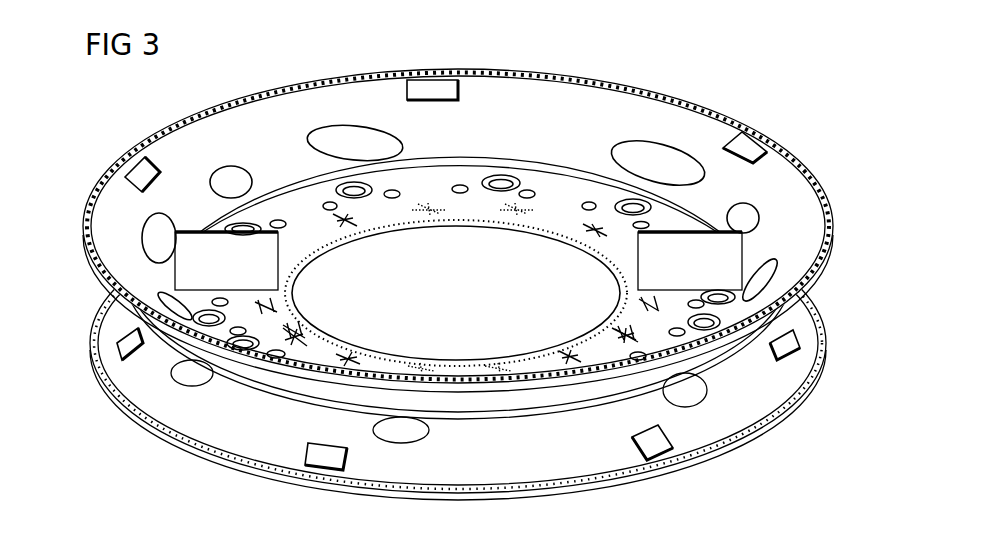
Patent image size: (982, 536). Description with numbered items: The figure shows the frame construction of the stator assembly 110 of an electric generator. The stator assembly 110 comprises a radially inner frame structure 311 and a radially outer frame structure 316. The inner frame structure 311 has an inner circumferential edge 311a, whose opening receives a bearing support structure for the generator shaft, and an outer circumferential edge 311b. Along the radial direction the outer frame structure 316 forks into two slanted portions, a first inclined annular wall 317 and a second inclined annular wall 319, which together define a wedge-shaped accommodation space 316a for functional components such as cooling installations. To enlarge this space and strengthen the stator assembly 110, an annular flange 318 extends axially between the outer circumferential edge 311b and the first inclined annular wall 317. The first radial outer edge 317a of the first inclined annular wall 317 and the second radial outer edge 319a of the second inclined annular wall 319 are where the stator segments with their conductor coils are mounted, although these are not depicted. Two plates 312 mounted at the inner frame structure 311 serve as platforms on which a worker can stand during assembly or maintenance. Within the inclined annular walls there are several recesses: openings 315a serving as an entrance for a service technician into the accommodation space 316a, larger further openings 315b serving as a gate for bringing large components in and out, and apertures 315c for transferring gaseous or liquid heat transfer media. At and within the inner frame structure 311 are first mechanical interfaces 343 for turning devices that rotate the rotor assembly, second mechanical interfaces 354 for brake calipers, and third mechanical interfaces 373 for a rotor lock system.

The stator assembly 110 is at (740, 80).
The radially inner frame structure 311 is at (545, 353).
The inner circumferential edge 311a is at (482, 352).
The outer circumferential edge 311b is at (395, 196).
The plates 312 is at (298, 283).
The openings 315a is at (228, 183).
The further openings 315b is at (357, 140).
The apertures 315c is at (430, 92).
The radially outer frame structure 316 is at (780, 442).
The accommodation space 316a is at (830, 272).
The first inclined annular wall 317 is at (800, 173).
The first radial outer edge 317a is at (617, 84).
The annular flange 318 is at (557, 167).
The second inclined annular wall 319 is at (780, 389).
The second radial outer edge 319a is at (607, 478).
The first mechanical interfaces 343 is at (245, 228).
The second mechanical interfaces 354 is at (413, 358).
The third mechanical interfaces 373 is at (497, 178).